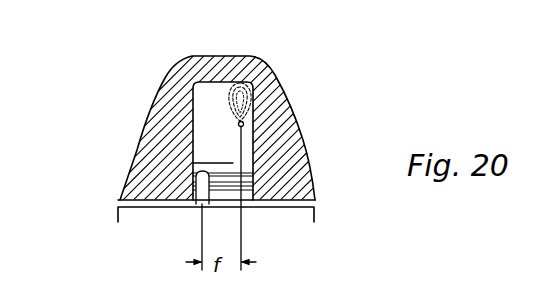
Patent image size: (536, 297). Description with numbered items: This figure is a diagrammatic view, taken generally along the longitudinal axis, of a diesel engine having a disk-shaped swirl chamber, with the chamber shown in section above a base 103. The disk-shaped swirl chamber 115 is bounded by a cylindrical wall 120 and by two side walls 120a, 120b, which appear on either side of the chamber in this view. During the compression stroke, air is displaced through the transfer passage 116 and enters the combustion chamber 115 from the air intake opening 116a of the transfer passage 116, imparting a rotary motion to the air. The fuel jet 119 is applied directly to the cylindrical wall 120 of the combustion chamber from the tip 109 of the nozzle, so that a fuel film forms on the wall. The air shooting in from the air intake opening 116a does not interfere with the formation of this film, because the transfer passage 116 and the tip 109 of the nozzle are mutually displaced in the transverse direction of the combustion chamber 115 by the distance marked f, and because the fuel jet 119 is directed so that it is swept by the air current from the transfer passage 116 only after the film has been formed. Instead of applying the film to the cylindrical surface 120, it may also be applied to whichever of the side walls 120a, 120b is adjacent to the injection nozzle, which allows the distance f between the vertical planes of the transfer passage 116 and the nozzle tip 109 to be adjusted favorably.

The base plate 103 is at (118, 218).
The tip of the nozzle 109 is at (268, 113).
The disk-shaped swirl chamber 115 is at (200, 102).
The transfer passage 116 is at (200, 194).
The air intake opening 116a is at (208, 197).
The fuel jet 119 is at (262, 116).
The cylindrical wall 120 is at (210, 72).
The side wall 120a is at (175, 128).
The side wall 120b is at (256, 134).